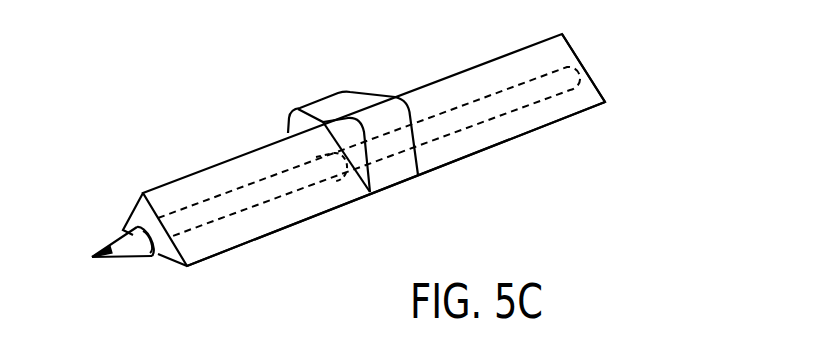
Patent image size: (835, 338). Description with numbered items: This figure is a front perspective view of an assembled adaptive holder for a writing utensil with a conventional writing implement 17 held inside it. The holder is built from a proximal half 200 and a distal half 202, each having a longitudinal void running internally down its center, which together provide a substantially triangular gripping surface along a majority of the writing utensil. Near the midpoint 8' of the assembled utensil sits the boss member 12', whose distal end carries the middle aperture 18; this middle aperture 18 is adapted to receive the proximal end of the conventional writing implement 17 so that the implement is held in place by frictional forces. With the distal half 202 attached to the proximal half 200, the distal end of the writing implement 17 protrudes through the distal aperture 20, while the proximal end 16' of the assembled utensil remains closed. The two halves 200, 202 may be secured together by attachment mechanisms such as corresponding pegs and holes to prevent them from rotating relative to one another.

The midpoint 8' is at (376, 162).
The boss member 12' is at (346, 110).
The proximal end 16' is at (626, 68).
The conventional writing implement 17 is at (447, 110).
The middle aperture 18 is at (335, 182).
The distal aperture 20 is at (152, 257).
The proximal half 200 is at (406, 176).
The distal half 202 is at (283, 233).